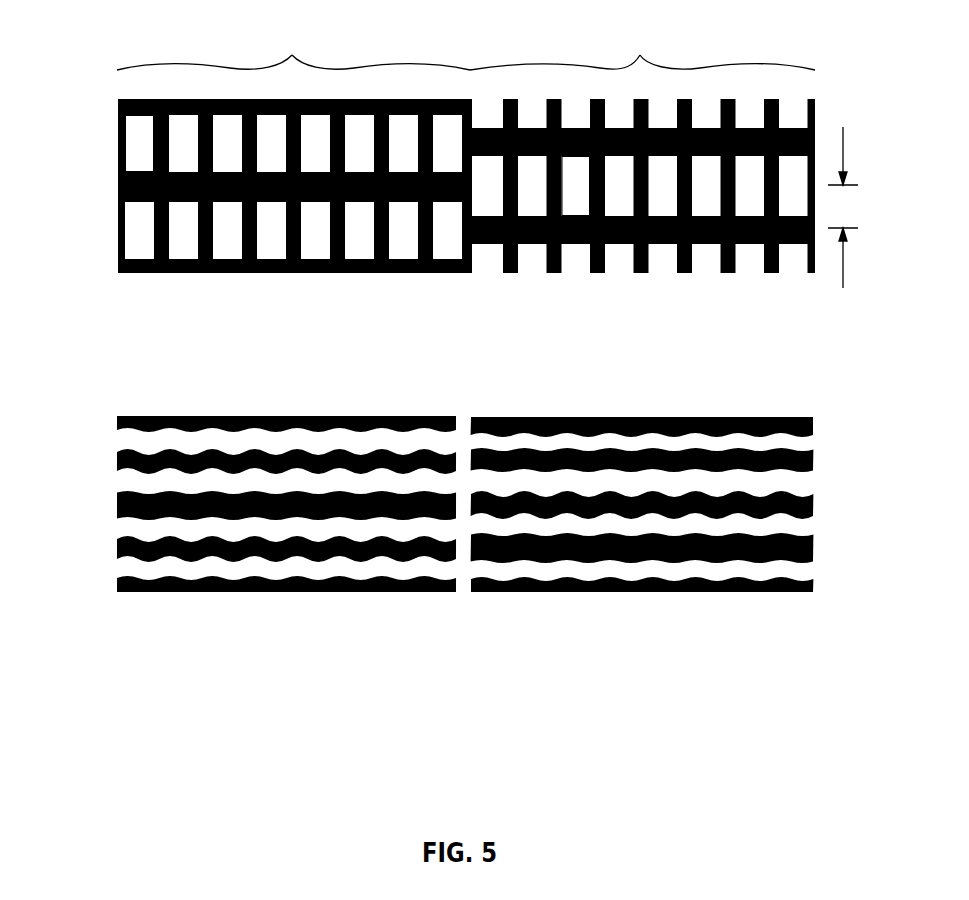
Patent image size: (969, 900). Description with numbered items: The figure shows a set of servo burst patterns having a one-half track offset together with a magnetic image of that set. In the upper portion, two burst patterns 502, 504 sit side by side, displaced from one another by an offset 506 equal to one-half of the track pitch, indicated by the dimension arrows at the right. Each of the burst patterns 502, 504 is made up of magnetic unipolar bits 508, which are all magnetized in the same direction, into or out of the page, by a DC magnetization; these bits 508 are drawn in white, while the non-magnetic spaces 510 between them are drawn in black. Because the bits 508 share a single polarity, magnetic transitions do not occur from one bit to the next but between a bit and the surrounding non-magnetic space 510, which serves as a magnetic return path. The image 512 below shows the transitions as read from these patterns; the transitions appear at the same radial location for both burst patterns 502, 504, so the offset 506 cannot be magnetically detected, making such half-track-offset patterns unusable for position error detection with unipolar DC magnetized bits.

The burst pattern 502 is at (200, 65).
The burst pattern 504 is at (493, 62).
The offset 506 is at (843, 288).
The magnetic unipolar bits 508 is at (145, 135).
The non-magnetic spaces 510 is at (117, 187).
The image 512 is at (463, 418).